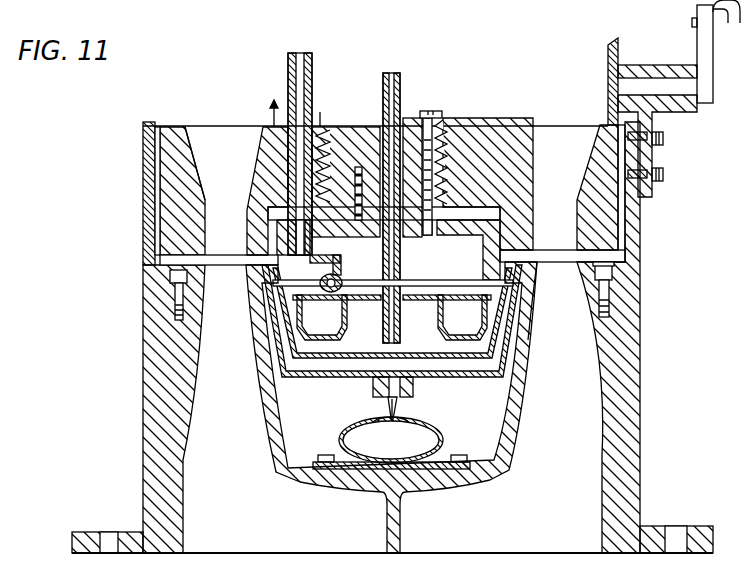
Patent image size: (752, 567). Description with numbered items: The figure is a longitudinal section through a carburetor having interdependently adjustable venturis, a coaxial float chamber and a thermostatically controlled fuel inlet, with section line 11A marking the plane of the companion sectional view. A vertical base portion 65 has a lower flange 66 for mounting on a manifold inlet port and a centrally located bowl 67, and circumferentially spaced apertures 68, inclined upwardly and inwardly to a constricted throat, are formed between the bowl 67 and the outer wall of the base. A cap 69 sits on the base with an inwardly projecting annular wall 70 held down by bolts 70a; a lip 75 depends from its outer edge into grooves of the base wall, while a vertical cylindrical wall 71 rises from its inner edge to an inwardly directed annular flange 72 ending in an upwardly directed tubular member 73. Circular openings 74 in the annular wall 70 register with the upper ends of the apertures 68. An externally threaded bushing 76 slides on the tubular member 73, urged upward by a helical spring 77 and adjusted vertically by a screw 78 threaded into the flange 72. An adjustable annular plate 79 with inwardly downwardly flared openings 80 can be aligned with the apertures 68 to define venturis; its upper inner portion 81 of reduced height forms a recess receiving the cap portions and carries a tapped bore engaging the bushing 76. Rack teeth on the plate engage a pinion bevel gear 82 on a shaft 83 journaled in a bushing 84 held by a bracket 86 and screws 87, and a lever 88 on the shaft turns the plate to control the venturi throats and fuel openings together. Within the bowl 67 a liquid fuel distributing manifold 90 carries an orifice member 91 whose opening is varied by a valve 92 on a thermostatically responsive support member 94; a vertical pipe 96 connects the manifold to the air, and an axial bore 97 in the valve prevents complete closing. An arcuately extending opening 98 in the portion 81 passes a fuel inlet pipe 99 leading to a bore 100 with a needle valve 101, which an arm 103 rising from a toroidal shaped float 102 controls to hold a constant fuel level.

The section line 11A- 11A is at (301, 113).
The vertical base portion 65 is at (627, 370).
The lower flange 66 is at (662, 525).
The bowl 67 is at (500, 447).
The apertures 68 is at (203, 347).
The cap 69 is at (642, 247).
The annular wall 70 is at (500, 283).
The bolts 70a is at (616, 278).
The vertical cylindrical wall 71 is at (488, 260).
The annular flange 72 is at (453, 227).
The tubular member 73 is at (412, 118).
The circular openings 74 is at (537, 267).
The lip 75 is at (627, 292).
The externally threaded bushing 76 is at (342, 124).
The helical spring 77 is at (470, 162).
The screw 78 is at (437, 130).
The adjustable annular plate 79 is at (168, 128).
The flared openings 80 is at (190, 150).
The upper inner portion 81 is at (507, 145).
The pinion bevel gear 82 is at (618, 50).
The shaft 83 is at (680, 96).
The bushing 84 is at (653, 72).
The bracket 86 is at (655, 157).
The screws 87 is at (657, 187).
The lever 88 is at (703, 78).
The liquid fuel distributing manifold 90 is at (489, 378).
The orifice member 91 is at (383, 398).
The valve 92 is at (397, 417).
The thermostatically responsive support member 94 is at (443, 433).
The vertical pipe 96 is at (400, 90).
The axial bore 97 is at (391, 437).
The arcuately extending opening 98 is at (271, 140).
The fuel inlet pipe 99 is at (311, 68).
The bore 100 is at (303, 297).
The needle valve 101 is at (335, 249).
The toroidal shaped float 102 is at (408, 305).
The arm 103 is at (343, 270).